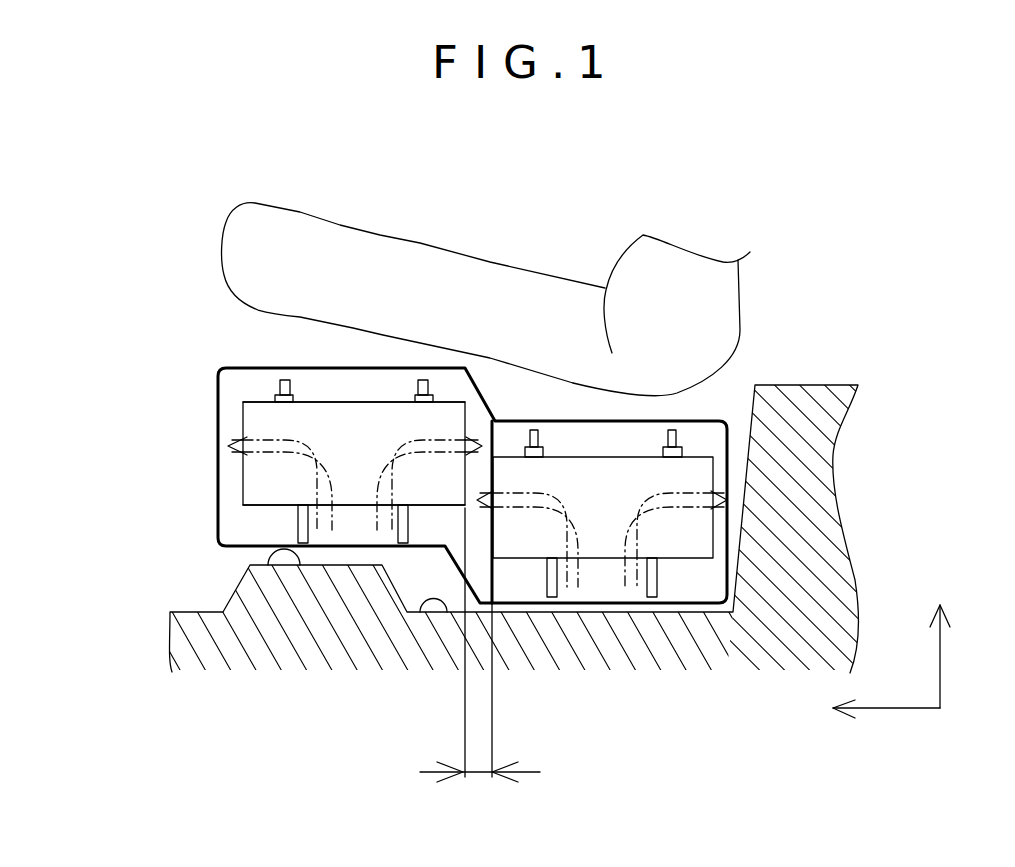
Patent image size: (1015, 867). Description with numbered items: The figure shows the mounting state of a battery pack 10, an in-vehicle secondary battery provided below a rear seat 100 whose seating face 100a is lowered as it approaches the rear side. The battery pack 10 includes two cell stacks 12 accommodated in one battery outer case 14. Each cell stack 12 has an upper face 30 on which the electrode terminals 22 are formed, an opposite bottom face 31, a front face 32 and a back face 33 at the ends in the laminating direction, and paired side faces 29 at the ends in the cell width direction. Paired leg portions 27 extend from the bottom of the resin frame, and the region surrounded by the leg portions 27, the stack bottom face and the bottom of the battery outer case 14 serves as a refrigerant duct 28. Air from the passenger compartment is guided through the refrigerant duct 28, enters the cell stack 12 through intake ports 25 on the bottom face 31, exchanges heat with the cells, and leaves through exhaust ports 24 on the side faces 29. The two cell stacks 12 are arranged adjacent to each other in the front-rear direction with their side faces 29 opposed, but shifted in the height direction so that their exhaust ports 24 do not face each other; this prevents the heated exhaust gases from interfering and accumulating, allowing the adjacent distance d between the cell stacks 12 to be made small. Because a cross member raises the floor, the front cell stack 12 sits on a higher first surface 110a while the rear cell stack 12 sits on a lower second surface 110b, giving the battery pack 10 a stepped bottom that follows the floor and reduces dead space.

The battery pack 10 is at (173, 410).
The cell stack 12 is at (431, 434).
The battery outer case 14 is at (507, 522).
The electrode terminal 22 is at (283, 378).
The exhaust port 24 is at (232, 443).
The intake port 25 is at (350, 498).
The leg portion 27 is at (302, 523).
The refrigerant duct 28 is at (602, 580).
The side face 29 is at (487, 455).
The upper face 30 is at (330, 402).
The bottom face 31 is at (440, 507).
The front face 32 is at (217, 372).
The back face 33 is at (250, 377).
The seating face 100a is at (412, 250).
The rear seat 100 is at (486, 257).
The first surface 110a is at (298, 565).
The second surface 110b is at (418, 612).
The adjacent distance d is at (480, 645).